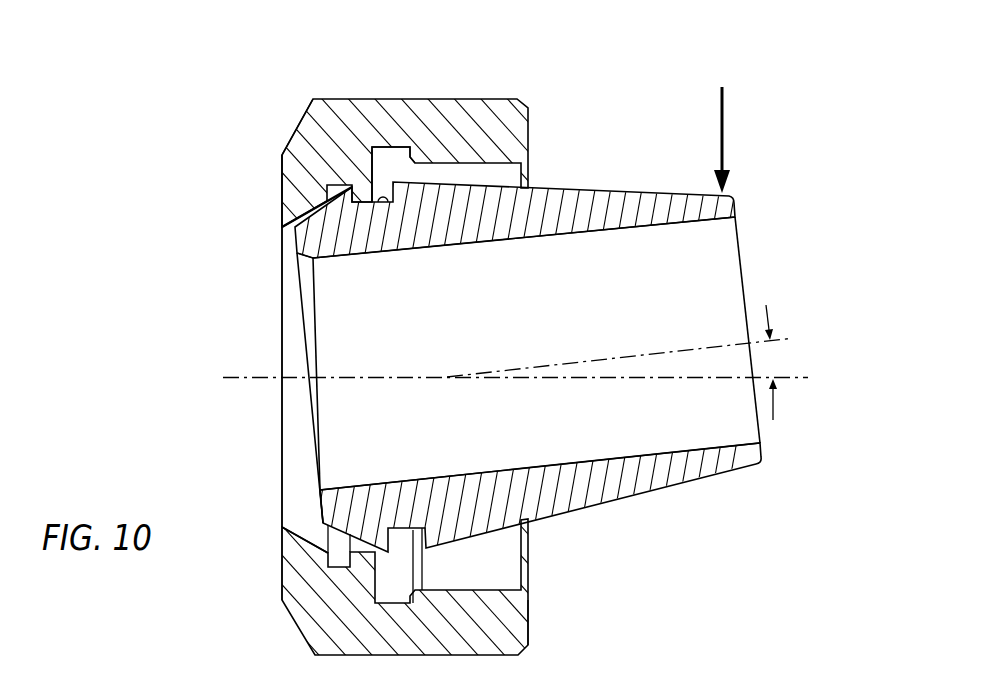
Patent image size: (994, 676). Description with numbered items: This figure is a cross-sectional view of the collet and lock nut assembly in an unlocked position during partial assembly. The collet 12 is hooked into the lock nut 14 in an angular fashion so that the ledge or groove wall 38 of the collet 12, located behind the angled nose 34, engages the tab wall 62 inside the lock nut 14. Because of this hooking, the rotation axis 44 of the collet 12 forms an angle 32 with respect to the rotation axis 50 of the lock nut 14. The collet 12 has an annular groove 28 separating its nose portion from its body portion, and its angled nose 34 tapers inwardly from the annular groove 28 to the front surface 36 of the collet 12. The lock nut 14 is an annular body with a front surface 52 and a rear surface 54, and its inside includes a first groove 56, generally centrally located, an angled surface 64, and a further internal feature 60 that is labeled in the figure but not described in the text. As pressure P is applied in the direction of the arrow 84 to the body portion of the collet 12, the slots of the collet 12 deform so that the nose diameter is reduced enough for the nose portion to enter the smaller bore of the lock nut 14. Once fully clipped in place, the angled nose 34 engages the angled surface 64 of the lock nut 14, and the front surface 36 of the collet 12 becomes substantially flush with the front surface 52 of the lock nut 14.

The collet 12 is at (611, 178).
The lock nut 14 is at (346, 84).
The annular groove 28 is at (390, 251).
The angle 32 is at (773, 362).
The angled nose 34 is at (282, 165).
The front surface 36 is at (282, 245).
The ledge 38 is at (318, 256).
The axis of rotation 44 is at (797, 339).
The axis of rotation 50 is at (797, 378).
The front surface 52 is at (282, 189).
The rear surface 54 is at (530, 624).
The first groove 56 is at (373, 147).
The shoulder wall 60 is at (373, 185).
The tab wall 62 is at (328, 130).
The angled surface 64 is at (284, 236).
The arrow 84 is at (726, 135).